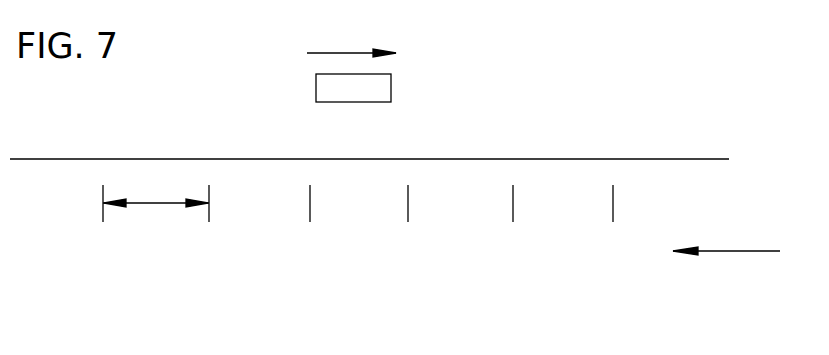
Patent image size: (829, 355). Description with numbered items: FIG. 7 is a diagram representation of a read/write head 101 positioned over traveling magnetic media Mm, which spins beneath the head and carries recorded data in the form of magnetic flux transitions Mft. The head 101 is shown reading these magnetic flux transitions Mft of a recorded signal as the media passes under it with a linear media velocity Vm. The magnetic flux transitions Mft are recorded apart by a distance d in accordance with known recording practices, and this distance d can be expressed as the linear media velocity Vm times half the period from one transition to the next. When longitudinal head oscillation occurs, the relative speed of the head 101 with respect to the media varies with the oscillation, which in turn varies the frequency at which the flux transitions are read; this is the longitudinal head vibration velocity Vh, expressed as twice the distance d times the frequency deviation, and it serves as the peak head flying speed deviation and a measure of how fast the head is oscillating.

The head 101 is at (391, 88).
The longitudinal head vibration velocity Vh is at (330, 53).
The linear media velocity Vm is at (730, 251).
The magnetic media Mm is at (661, 159).
The magnetic flux transitions Mft is at (253, 172).
The distance d is at (163, 205).